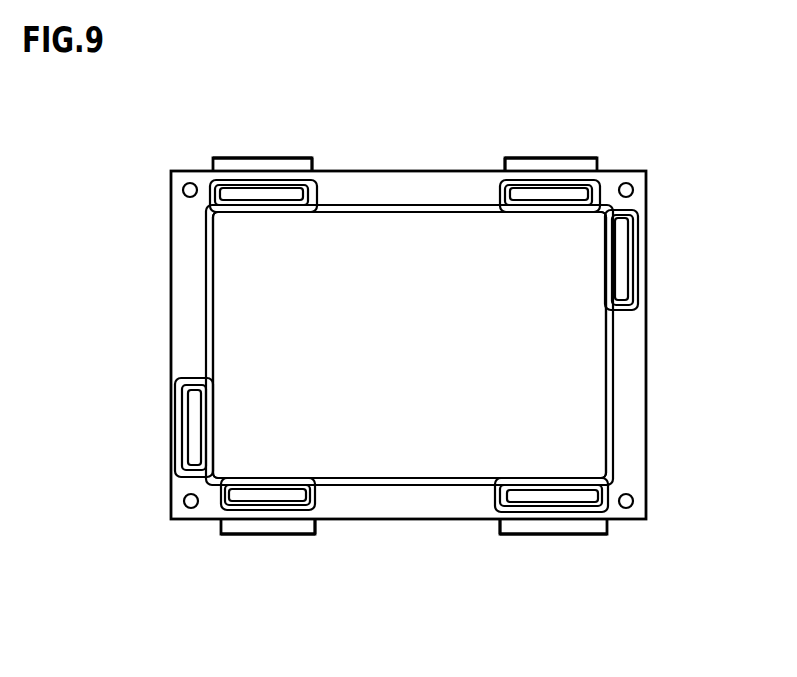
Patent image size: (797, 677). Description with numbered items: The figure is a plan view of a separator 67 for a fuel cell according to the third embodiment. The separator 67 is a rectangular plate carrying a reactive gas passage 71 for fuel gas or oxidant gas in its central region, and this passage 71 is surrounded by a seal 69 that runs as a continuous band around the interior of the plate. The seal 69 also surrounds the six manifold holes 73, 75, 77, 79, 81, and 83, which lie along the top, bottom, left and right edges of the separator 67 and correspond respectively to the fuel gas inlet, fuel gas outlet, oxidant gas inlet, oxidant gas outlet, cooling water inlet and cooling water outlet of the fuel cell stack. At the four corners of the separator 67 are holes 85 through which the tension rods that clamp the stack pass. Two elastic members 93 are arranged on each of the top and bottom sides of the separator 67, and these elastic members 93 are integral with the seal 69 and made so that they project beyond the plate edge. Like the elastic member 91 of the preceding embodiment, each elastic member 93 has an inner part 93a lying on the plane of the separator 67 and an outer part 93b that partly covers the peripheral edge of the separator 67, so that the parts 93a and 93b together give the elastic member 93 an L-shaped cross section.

The separator 67 is at (632, 338).
The seal 69 is at (285, 210).
The reactive gas passage 71 is at (418, 437).
The manifold hole 73 is at (568, 195).
The manifold hole 75 is at (235, 497).
The manifold hole 77 is at (190, 445).
The manifold hole 79 is at (622, 272).
The manifold hole 81 is at (580, 500).
The manifold hole 83 is at (238, 188).
The hole 85 is at (191, 183).
The elastic member 91 is at (413, 335).
The elastic member 93 is at (320, 147).
The inner part 93a is at (296, 176).
The outer part 93b is at (255, 163).